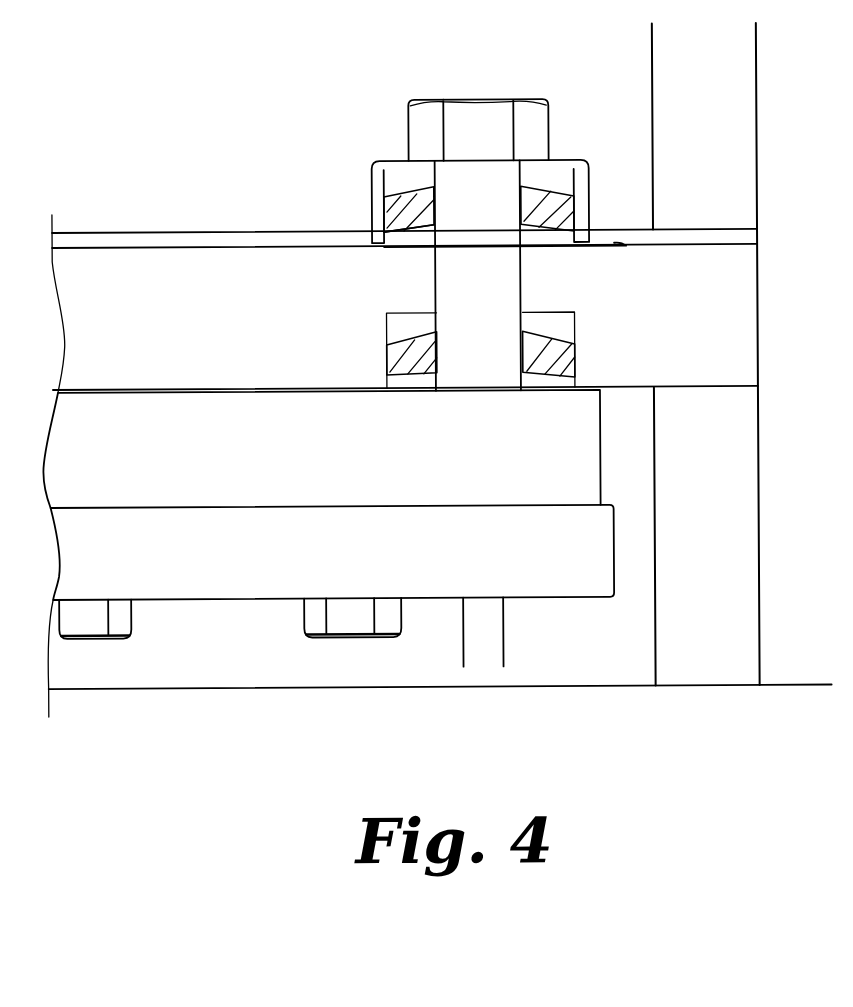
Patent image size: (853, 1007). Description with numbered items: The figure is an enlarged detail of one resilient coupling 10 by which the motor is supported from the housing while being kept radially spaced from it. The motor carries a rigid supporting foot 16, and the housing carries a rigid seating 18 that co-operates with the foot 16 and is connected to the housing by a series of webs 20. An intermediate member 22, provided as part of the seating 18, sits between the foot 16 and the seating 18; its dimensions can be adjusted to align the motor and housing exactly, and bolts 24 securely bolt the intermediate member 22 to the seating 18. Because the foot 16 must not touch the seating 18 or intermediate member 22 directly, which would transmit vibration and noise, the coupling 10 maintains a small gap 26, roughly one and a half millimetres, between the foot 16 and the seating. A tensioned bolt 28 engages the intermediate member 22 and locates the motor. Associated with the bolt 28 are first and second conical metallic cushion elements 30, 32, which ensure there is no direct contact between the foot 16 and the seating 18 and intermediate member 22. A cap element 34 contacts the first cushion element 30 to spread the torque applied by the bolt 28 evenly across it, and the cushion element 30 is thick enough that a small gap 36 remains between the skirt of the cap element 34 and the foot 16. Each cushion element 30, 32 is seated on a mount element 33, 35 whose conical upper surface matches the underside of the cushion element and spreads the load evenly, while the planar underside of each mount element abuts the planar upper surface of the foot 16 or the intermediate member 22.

The resilient coupling 10 is at (541, 227).
The supporting foot 16 is at (698, 303).
The seating 18 is at (593, 563).
The web 20 is at (491, 627).
The intermediate member 22 is at (582, 467).
The bolt 24 is at (358, 617).
The gap 26 is at (251, 388).
The bolt 28 is at (493, 130).
The first conical metallic cushion element 30 is at (553, 213).
The second conical metallic cushion element 32 is at (565, 358).
The mount element 33 is at (397, 377).
The cap element 34 is at (559, 177).
The mount element 35 is at (400, 232).
The gap 36 is at (637, 246).